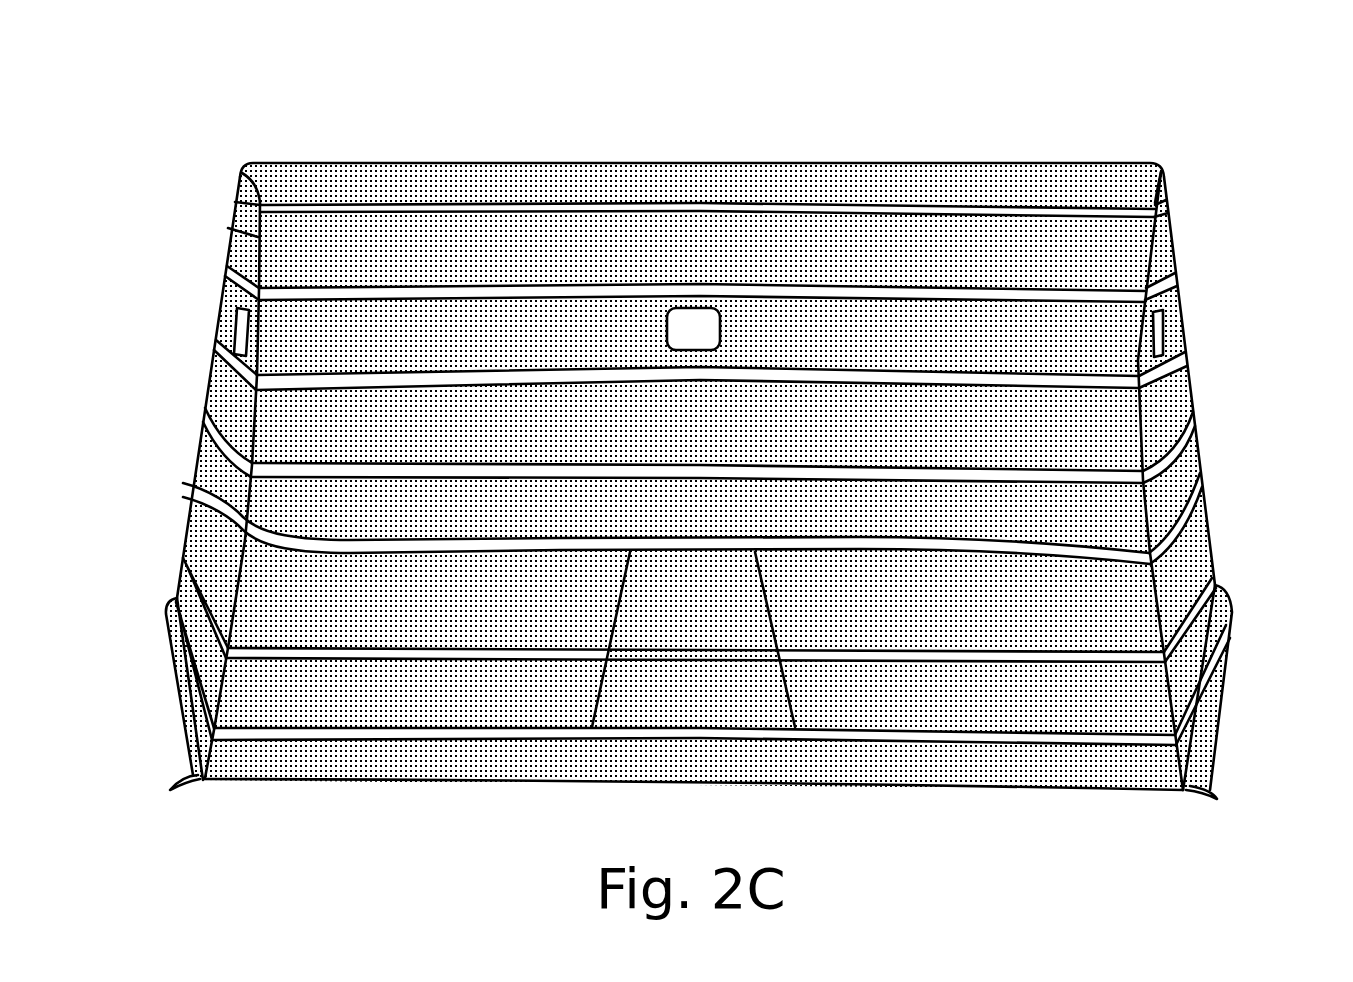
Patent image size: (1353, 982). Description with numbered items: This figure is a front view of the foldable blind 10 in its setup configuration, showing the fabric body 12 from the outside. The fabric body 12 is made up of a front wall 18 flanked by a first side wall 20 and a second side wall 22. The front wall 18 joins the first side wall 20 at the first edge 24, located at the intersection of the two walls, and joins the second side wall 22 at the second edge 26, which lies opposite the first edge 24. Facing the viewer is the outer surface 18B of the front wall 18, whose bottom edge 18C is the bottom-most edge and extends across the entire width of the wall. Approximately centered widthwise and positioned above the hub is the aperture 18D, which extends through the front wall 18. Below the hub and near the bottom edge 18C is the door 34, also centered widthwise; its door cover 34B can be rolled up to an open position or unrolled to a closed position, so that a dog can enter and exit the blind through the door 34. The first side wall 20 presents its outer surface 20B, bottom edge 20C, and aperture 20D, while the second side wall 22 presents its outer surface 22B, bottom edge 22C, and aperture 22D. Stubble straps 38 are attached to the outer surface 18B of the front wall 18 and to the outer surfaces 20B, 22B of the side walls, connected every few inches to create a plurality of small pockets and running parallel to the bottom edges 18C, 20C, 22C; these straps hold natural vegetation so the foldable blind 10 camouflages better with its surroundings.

The foldable blind 10 is at (774, 101).
The fabric body 12 is at (867, 151).
The front wall 18 is at (950, 240).
The outer surface 18B is at (1072, 250).
The bottom edge 18C is at (1035, 797).
The aperture 18D is at (693, 322).
The first side wall 20 is at (1187, 450).
The outer surface 20B is at (1187, 553).
The bottom edge 20C is at (1217, 690).
The aperture 20D is at (1168, 325).
The second side wall 22 is at (196, 529).
The outer surface 22B is at (222, 452).
The bottom edge 22C is at (173, 632).
The aperture 22D is at (238, 330).
The first edge 24 is at (1152, 250).
The second edge 26 is at (250, 233).
The door 34 is at (646, 699).
The door cover 34B is at (713, 682).
The stubble straps 38 is at (396, 274).